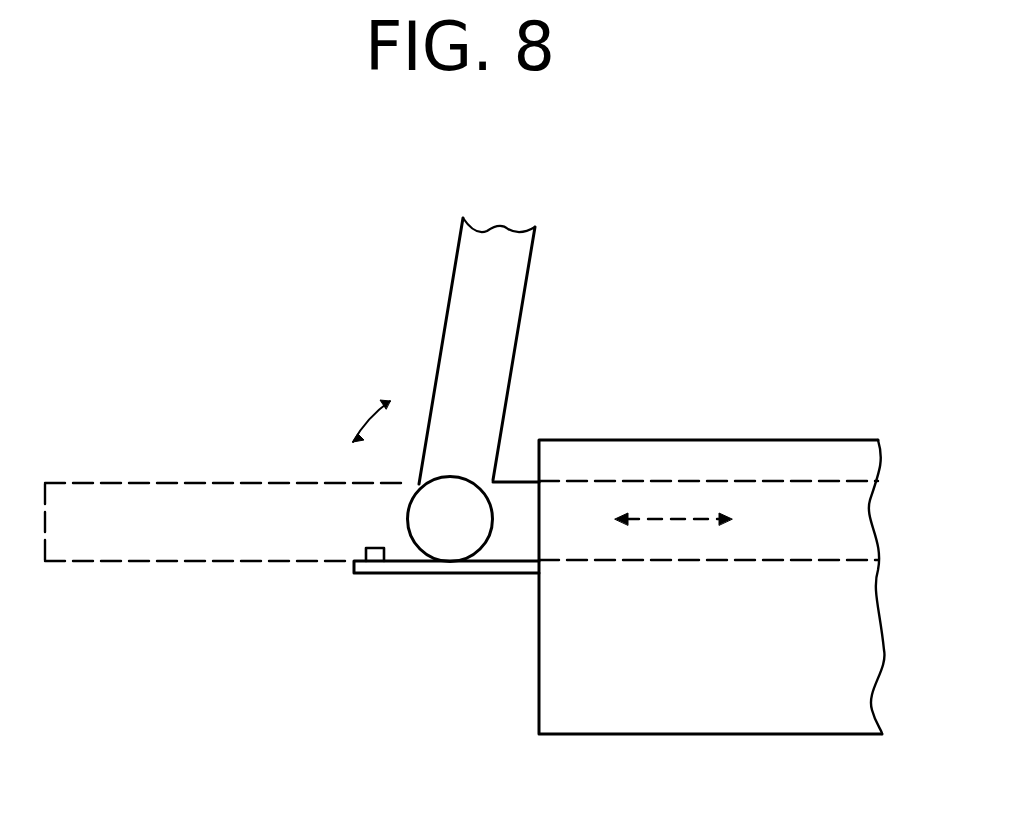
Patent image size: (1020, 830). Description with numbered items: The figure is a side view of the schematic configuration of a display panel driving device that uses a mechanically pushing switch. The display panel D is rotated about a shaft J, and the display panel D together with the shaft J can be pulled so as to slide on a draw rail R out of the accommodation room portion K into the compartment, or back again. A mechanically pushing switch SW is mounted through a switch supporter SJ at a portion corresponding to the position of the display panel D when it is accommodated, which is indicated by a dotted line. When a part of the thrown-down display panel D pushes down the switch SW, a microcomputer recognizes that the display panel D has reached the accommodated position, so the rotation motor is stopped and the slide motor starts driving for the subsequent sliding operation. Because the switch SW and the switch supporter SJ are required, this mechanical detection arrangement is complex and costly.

The display panel D is at (527, 278).
The accommodation room portion K is at (773, 734).
The draw rail R is at (515, 480).
The shaft J is at (462, 548).
The mechanically pushing switch SW is at (375, 555).
The switch supporter SJ is at (405, 567).